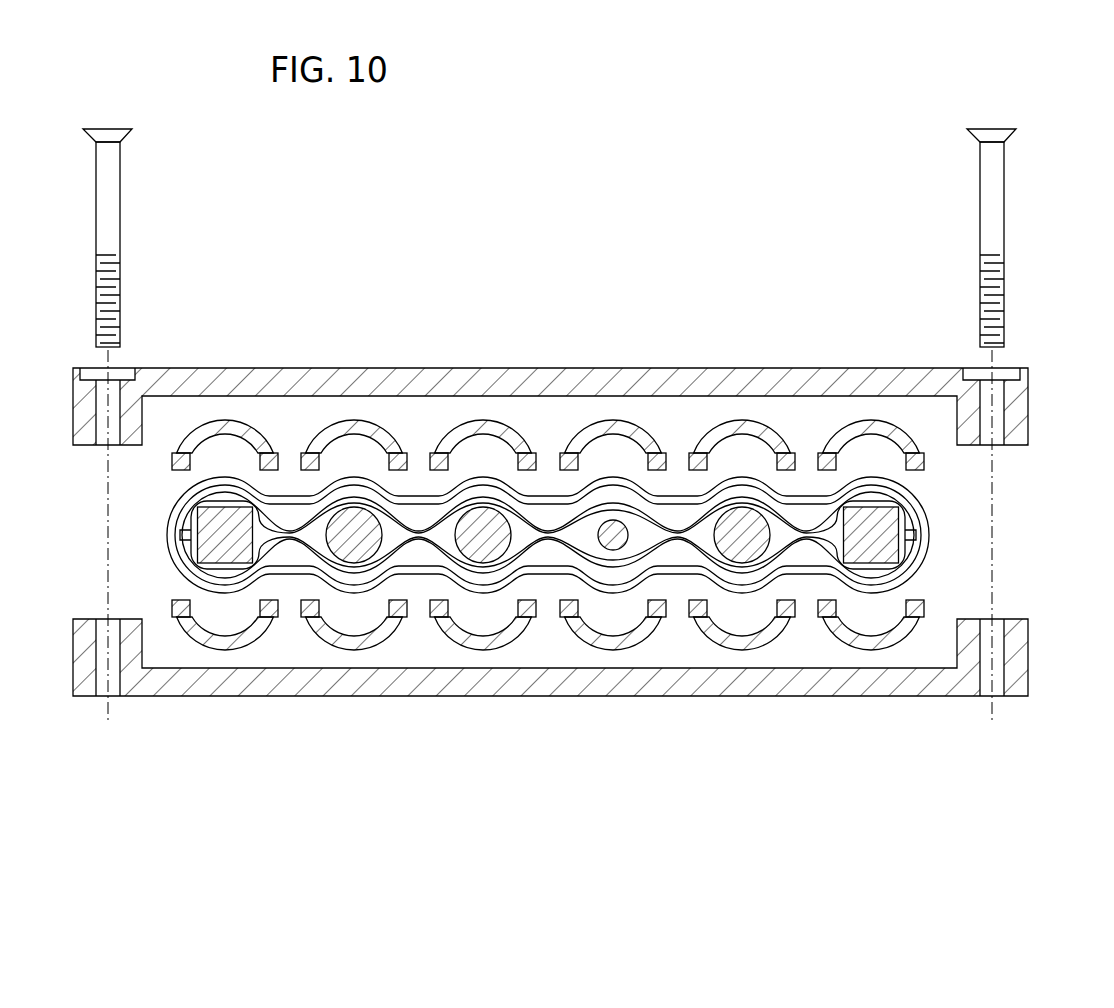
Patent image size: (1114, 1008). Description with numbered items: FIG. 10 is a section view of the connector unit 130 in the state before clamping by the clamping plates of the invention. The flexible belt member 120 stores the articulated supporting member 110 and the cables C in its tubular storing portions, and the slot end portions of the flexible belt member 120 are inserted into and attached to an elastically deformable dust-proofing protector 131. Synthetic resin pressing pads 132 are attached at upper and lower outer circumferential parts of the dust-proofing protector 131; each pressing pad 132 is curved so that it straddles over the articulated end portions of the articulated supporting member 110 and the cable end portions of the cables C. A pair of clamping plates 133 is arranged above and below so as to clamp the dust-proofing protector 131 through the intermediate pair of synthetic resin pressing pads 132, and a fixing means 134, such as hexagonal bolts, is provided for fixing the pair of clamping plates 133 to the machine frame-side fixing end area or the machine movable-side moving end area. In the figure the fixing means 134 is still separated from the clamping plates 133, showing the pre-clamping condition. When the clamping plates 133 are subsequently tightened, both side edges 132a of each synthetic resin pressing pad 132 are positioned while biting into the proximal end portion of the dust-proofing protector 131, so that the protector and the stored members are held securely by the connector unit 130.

The connector unit 130 is at (586, 77).
The articulated supporting member 110 is at (551, 505).
The flexible belt member 120 is at (878, 495).
The dust-proofing protector 131 is at (903, 580).
The synthetic resin pressing pad 132 is at (546, 530).
The side edge of synthetic resin pressing pad 132a is at (311, 304).
The clamping plate 133 is at (1018, 413).
The fixing means 134 is at (112, 190).
The cable C is at (352, 515).